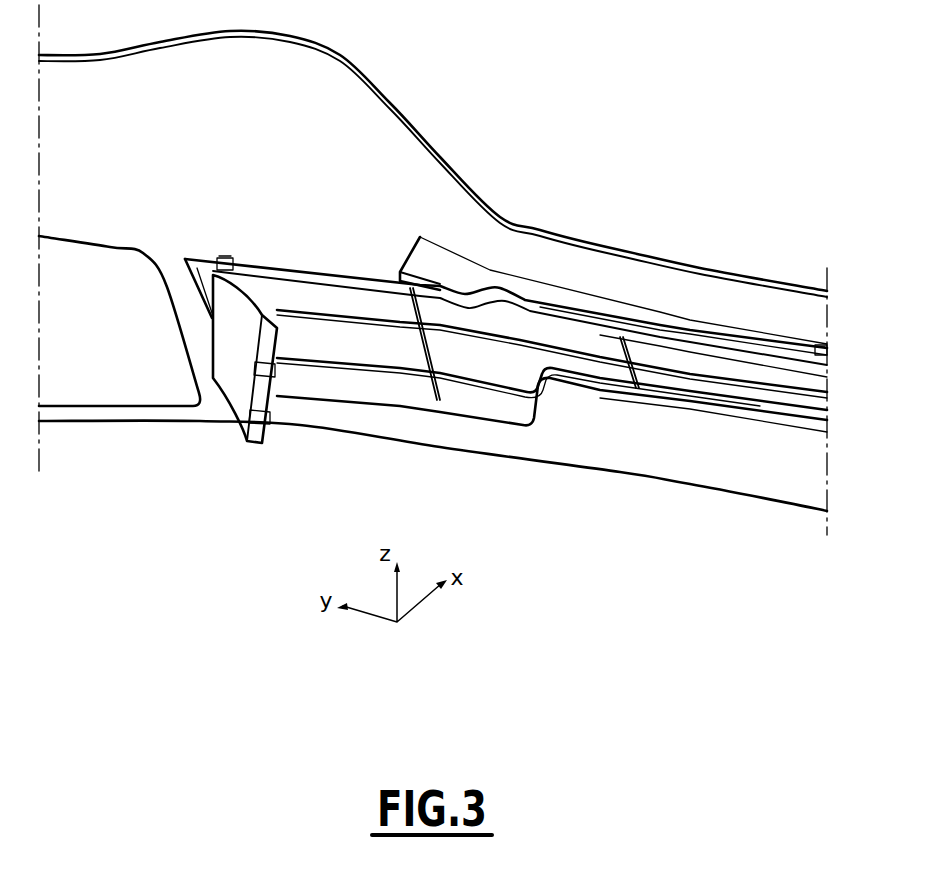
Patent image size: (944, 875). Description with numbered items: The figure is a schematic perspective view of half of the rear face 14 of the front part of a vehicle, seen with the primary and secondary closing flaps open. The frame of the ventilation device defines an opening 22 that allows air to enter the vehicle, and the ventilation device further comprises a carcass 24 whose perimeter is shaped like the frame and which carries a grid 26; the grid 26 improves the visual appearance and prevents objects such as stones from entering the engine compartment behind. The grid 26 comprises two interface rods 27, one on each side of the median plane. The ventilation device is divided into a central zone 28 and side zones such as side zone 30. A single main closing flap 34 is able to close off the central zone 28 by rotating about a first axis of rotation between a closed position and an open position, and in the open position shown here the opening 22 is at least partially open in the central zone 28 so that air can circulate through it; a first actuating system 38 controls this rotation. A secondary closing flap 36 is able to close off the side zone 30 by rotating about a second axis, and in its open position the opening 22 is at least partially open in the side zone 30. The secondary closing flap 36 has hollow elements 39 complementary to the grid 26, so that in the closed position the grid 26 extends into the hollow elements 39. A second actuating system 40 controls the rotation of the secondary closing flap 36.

The rear face 14 is at (662, 455).
The opening 22 is at (380, 398).
The carcass 24 is at (436, 307).
The grid 26 is at (633, 352).
The interface rods 27 is at (433, 350).
The central zone 28 is at (797, 395).
The side zone 30 is at (291, 409).
The main closing flap 34 is at (717, 342).
The secondary closing flap 36 is at (240, 382).
The first actuating system 38 is at (824, 352).
The hollow elements 39 is at (310, 355).
The second actuating system 40 is at (227, 258).